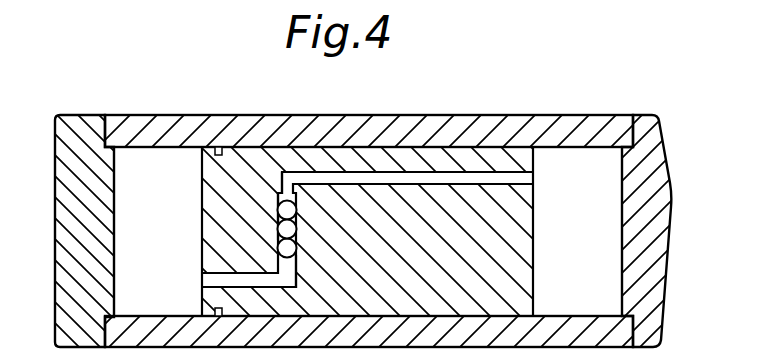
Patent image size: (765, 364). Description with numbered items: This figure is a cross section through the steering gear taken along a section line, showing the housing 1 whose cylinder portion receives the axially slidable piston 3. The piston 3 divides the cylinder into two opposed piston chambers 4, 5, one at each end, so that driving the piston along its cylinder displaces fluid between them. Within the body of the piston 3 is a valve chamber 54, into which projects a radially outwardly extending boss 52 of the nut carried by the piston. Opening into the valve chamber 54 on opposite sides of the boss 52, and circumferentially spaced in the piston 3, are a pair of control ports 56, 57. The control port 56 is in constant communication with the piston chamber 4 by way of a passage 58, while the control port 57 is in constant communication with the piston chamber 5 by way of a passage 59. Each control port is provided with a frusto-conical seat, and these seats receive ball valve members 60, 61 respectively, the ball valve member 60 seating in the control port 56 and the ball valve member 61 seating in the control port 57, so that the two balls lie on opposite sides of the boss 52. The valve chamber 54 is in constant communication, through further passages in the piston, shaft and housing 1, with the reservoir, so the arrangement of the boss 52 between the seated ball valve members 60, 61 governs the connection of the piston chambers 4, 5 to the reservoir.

The housing 1 is at (147, 126).
The piston 3 is at (220, 190).
The piston chamber 4 is at (158, 266).
The piston chamber 5 is at (582, 268).
The boss 52 is at (278, 222).
The valve chamber 54 is at (298, 234).
The control port 56 is at (297, 272).
The control port 57 is at (281, 192).
The passage 58 is at (218, 281).
The passage 59 is at (523, 177).
The ball valve member 60 is at (282, 250).
The ball valve member 61 is at (297, 214).